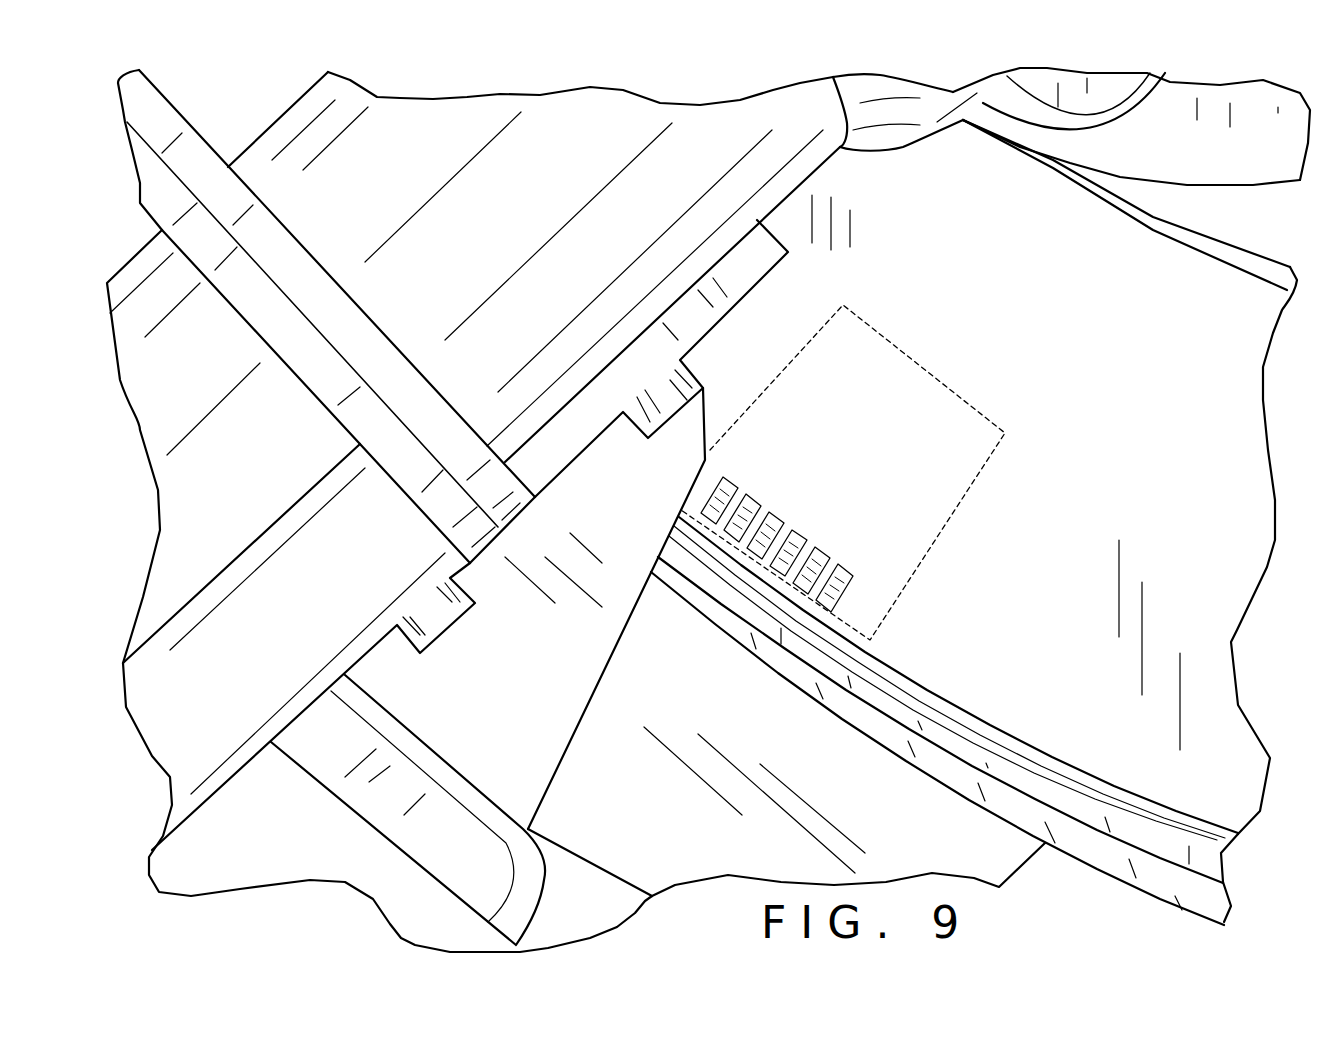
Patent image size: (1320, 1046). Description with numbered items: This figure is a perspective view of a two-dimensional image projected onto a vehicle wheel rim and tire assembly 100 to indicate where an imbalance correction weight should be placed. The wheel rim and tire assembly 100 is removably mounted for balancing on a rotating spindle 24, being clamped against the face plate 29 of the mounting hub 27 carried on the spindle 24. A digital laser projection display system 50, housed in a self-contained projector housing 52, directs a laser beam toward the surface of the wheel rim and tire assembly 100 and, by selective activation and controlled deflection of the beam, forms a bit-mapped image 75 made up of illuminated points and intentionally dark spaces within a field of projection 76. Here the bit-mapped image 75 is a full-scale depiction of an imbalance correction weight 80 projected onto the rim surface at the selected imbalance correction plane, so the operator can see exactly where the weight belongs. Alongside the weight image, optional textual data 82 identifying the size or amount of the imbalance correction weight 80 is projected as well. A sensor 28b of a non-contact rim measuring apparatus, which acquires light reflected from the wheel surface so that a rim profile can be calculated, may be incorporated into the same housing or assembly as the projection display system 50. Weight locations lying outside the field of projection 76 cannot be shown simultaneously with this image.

The rotating spindle 24 is at (597, 167).
The mounting hub 27 is at (910, 133).
The face plate 29 is at (1113, 127).
The digital laser projection display system 50 is at (562, 547).
The projector housing 52 is at (703, 413).
The bit-mapped image 75 is at (887, 485).
The field of projection 76 is at (943, 385).
The imbalance correction weight 80 is at (860, 563).
The textual data 82 is at (892, 528).
The vehicle wheel rim and tire assembly 100 is at (1242, 412).
The sensor 28b is at (570, 731).